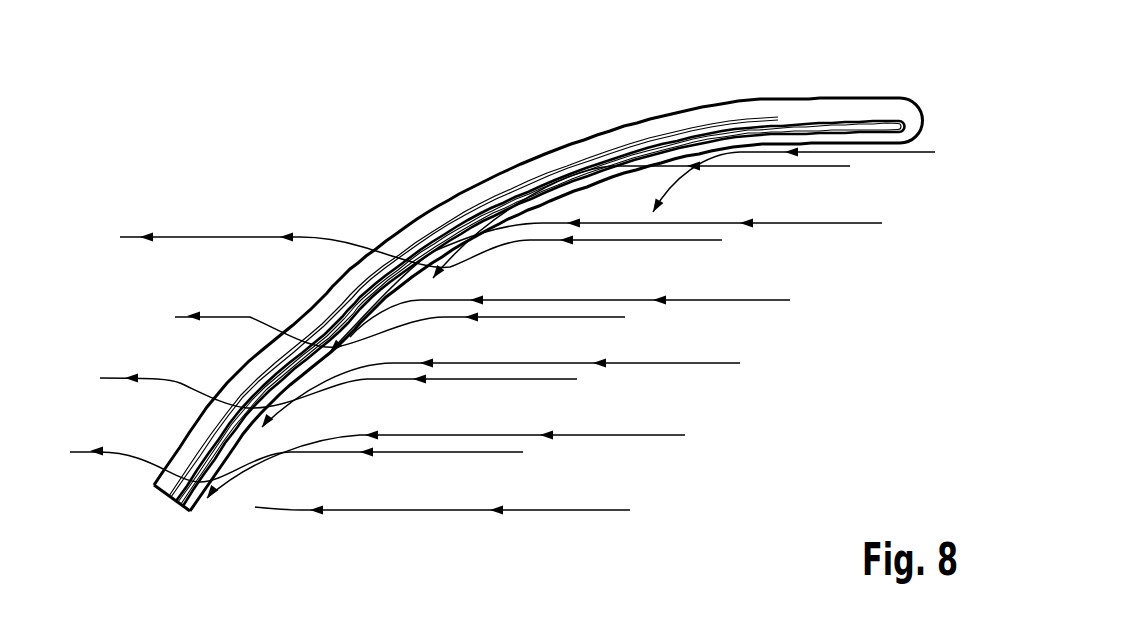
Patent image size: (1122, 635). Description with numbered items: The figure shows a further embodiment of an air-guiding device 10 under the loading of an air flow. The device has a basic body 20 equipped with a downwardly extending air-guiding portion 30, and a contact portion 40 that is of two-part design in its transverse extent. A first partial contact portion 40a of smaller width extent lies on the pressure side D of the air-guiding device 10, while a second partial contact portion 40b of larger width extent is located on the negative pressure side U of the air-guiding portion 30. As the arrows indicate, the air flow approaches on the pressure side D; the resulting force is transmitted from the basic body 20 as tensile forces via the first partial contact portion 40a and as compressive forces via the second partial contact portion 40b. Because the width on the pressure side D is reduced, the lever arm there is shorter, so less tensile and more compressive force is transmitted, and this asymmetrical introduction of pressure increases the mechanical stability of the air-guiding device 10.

The air-guiding device 10 is at (342, 72).
The basic body 20 is at (886, 104).
The air-guiding portion 30 is at (813, 119).
The contact portion 40 is at (160, 492).
The first partial contact portion 40a is at (750, 145).
The second partial contact portion 40b is at (427, 220).
The negative pressure side U is at (205, 365).
The pressure side D is at (343, 398).